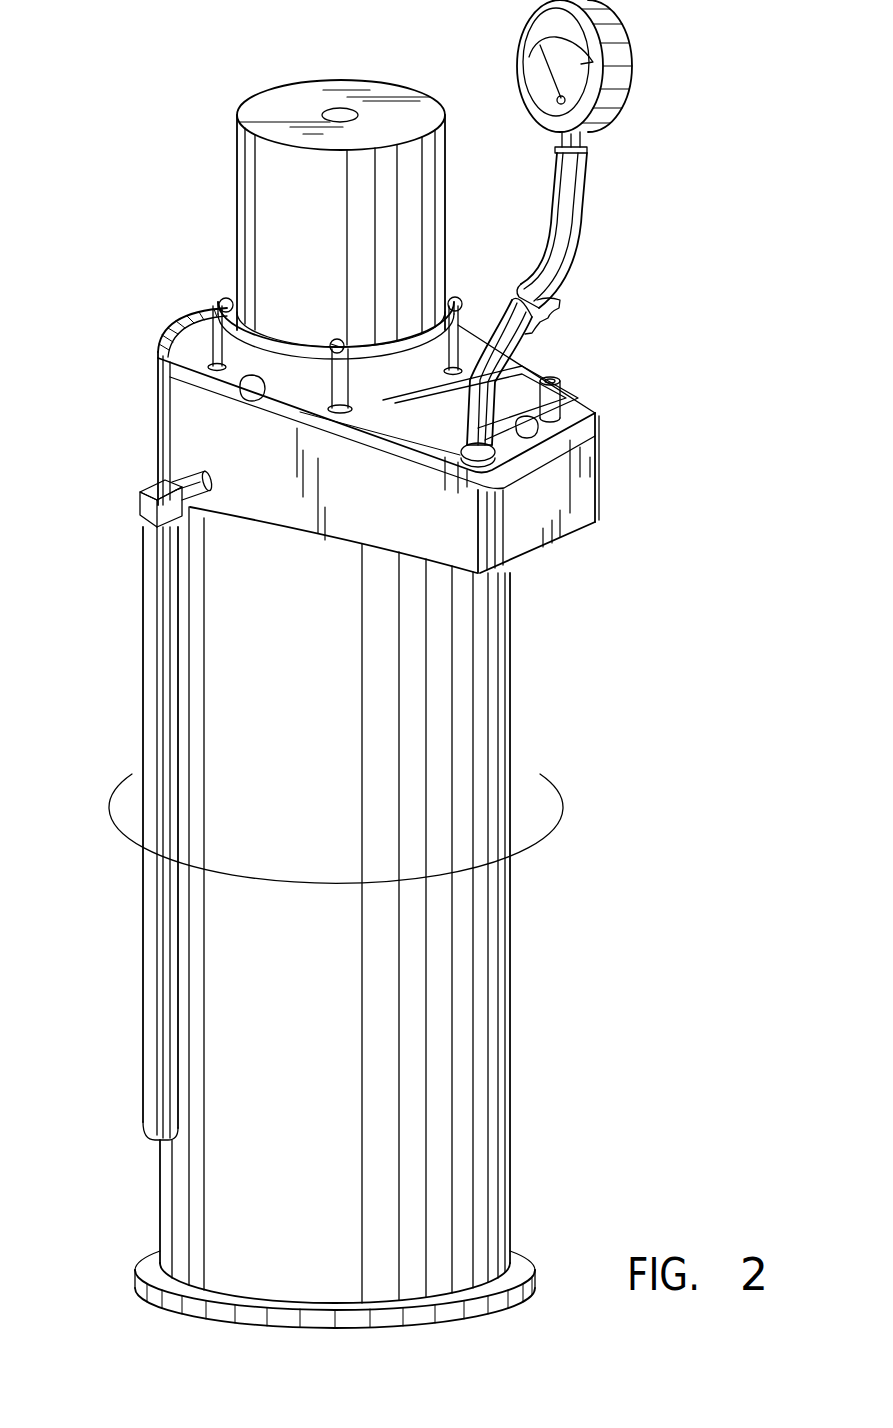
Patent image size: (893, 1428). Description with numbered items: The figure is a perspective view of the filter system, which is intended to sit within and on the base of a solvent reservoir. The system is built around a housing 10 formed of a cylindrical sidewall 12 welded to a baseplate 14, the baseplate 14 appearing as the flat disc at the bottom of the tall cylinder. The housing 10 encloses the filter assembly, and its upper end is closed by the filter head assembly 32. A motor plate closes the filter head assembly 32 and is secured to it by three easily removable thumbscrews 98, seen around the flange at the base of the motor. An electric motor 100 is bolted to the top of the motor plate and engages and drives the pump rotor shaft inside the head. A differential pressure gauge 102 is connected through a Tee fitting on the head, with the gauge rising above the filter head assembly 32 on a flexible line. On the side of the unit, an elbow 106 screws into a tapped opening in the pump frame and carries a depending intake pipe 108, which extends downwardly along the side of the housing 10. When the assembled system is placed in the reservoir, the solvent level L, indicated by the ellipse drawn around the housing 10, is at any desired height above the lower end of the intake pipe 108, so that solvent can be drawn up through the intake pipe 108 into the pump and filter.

The housing 10 is at (359, 664).
The cylindrical sidewall 12 is at (490, 940).
The baseplate 14 is at (525, 1252).
The filter head assembly 32 is at (152, 416).
The thumbscrews 98 is at (166, 348).
The electric motor 100 is at (237, 160).
The differential pressure gauge 102 is at (627, 48).
The elbow 106 is at (140, 494).
The intake pipe 108 is at (143, 645).
The solvent level L is at (538, 774).